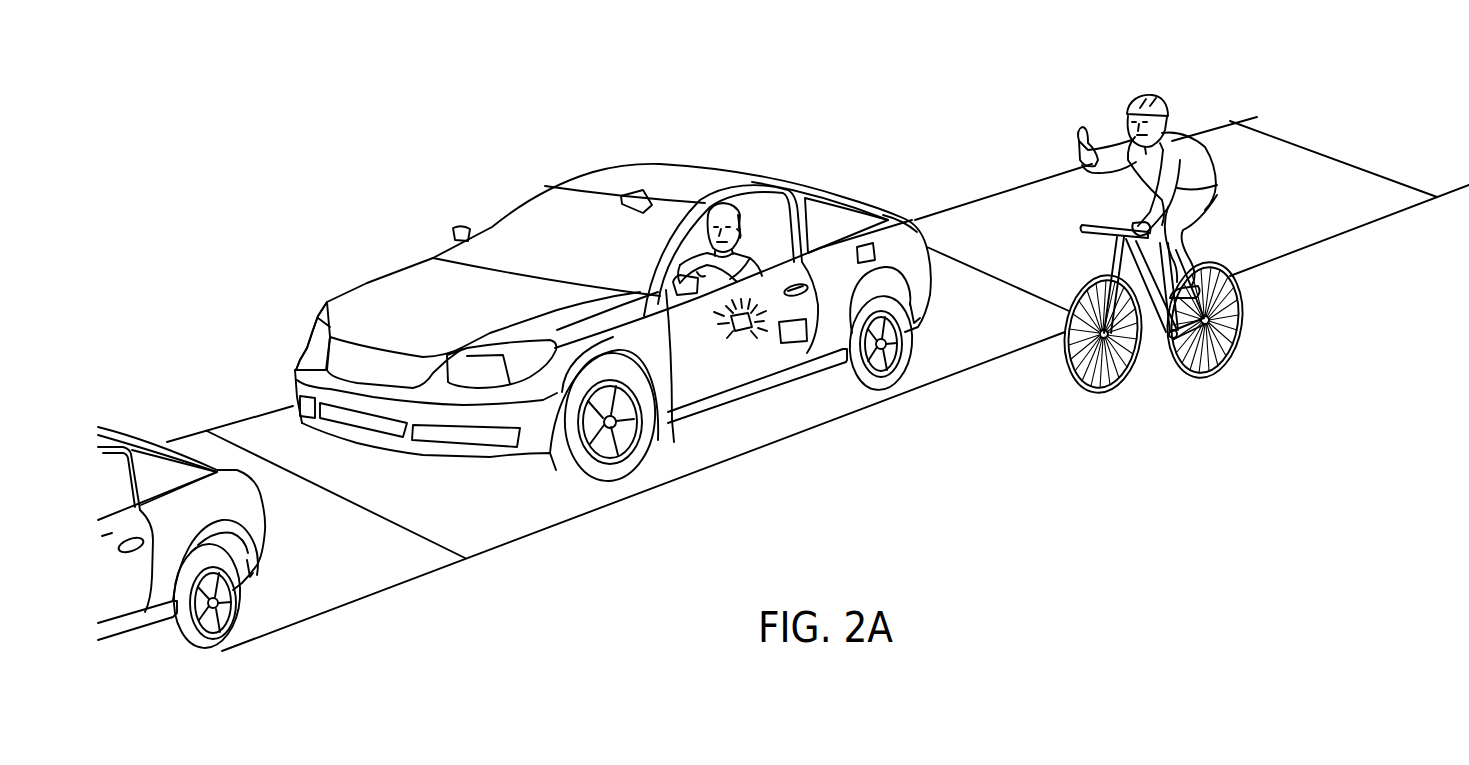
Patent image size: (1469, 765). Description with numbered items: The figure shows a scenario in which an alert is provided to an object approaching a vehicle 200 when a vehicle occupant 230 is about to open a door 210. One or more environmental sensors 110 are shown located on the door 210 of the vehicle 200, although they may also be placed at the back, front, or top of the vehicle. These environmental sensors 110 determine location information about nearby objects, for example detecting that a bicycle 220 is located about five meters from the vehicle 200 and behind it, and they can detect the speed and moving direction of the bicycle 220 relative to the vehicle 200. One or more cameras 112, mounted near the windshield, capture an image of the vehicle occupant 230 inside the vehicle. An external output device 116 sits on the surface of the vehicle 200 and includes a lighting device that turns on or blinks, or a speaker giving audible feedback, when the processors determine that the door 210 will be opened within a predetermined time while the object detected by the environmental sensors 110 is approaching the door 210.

The vehicle 200 is at (697, 168).
The door 210 is at (697, 360).
The vehicle occupant 230 is at (740, 207).
The cameras 112 is at (638, 199).
The external output device 116 is at (744, 333).
The environmental sensors 110 is at (793, 343).
The bicycle 220 is at (1240, 314).